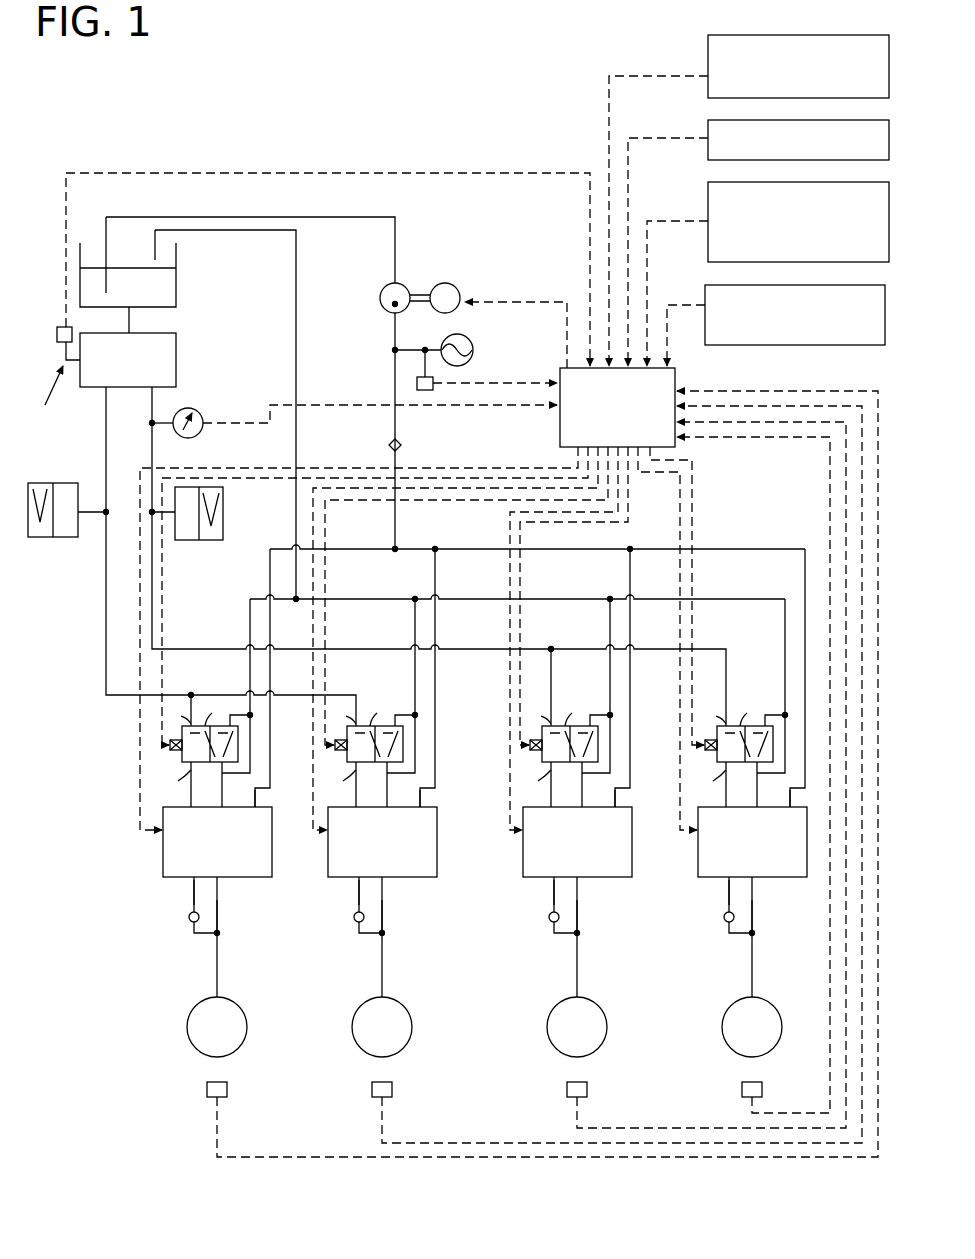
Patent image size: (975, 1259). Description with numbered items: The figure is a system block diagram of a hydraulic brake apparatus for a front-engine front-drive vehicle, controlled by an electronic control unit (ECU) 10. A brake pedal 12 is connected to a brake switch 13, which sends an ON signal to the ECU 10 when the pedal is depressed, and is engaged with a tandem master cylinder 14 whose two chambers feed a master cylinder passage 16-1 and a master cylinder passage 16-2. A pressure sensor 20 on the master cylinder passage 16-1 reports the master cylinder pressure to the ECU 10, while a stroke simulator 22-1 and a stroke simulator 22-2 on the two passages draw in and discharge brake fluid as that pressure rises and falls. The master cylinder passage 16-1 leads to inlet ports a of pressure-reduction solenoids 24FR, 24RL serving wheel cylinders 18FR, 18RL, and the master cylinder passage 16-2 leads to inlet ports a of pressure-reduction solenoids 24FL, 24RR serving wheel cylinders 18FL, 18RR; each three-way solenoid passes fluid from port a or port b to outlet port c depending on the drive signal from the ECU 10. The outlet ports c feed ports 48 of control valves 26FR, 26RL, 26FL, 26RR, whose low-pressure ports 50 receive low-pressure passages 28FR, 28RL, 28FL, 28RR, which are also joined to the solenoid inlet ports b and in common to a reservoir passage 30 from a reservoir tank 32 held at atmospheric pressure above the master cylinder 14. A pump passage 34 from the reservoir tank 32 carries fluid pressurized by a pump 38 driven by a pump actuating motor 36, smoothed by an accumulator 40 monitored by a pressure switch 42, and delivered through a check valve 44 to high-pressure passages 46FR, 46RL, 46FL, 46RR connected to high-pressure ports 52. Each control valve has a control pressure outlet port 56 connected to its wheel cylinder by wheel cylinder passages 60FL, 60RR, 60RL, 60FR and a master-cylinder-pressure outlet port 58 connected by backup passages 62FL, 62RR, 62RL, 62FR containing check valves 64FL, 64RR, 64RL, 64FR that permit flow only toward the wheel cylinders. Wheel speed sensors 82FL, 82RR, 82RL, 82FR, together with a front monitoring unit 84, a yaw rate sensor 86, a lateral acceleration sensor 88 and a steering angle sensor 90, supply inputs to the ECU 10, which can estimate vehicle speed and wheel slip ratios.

The electronic control unit 10 is at (560, 432).
The brake pedal 12 is at (63, 398).
The brake switch 13 is at (60, 327).
The master cylinder 14 is at (177, 357).
The master cylinder passage 16-1 is at (155, 400).
The master cylinder passage 16-2 is at (126, 404).
The pressure sensor 20 is at (200, 436).
The stroke simulator 22-1 is at (205, 540).
The stroke simulator 22-2 is at (50, 537).
The reservoir passage 30 is at (297, 285).
The reservoir tank 32 is at (177, 287).
The pump passage 34 is at (397, 250).
The pump actuating motor 36 is at (458, 286).
The pump 38 is at (400, 284).
The accumulator 40 is at (473, 346).
The pressure switch 42 is at (437, 392).
The check valve 44 is at (402, 447).
The front monitoring unit 84 is at (708, 72).
The yaw rate sensor 86 is at (708, 135).
The lateral acceleration sensor 88 is at (708, 217).
The steering angle sensor 90 is at (705, 301).
The pressure-reduction solenoid 24FL is at (200, 766).
The pressure-reduction solenoid 24RR is at (365, 766).
The pressure-reduction solenoid 24RL is at (560, 766).
The pressure-reduction solenoid 24FR is at (735, 766).
The control valve 26FL is at (183, 879).
The control valve 26RR is at (328, 857).
The control valve 26RL is at (523, 857).
The control valve 26FR is at (698, 857).
The low-pressure passage 28FL is at (250, 666).
The low-pressure passage 28RR is at (415, 668).
The low-pressure passage 28RL is at (610, 668).
The low-pressure passage 28FR is at (785, 690).
The high-pressure passage 46FL is at (270, 668).
The high-pressure passage 46RR is at (437, 672).
The high-pressure passage 46RL is at (648, 683).
The high-pressure passage 46FR is at (805, 580).
The port 48 is at (185, 800).
The low-pressure port 50 is at (222, 800).
The high-pressure port 52 is at (256, 814).
The control pressure outlet port 56 is at (231, 926).
The master-cylinder-pressure outlet port 58 is at (201, 894).
The wheel cylinder passage 60FL is at (218, 916).
The wheel cylinder passage 60RR is at (383, 916).
The wheel cylinder passage 60RL is at (578, 916).
The wheel cylinder passage 60FR is at (753, 916).
The backup passage 62FL is at (194, 893).
The backup passage 62RR is at (359, 893).
The backup passage 62RL is at (554, 893).
The backup passage 62FR is at (729, 893).
The check valve 64FL is at (190, 921).
The check valve 64RR is at (355, 921).
The check valve 64RL is at (550, 921).
The check valve 64FR is at (725, 921).
The wheel cylinder 18FL is at (192, 1005).
The wheel cylinder 18RR is at (357, 1005).
The wheel cylinder 18RL is at (552, 1005).
The wheel cylinder 18FR is at (727, 1005).
The wheel speed sensor 82FL is at (207, 1090).
The wheel speed sensor 82RR is at (372, 1090).
The wheel speed sensor 82RL is at (567, 1090).
The wheel speed sensor 82FR is at (742, 1090).